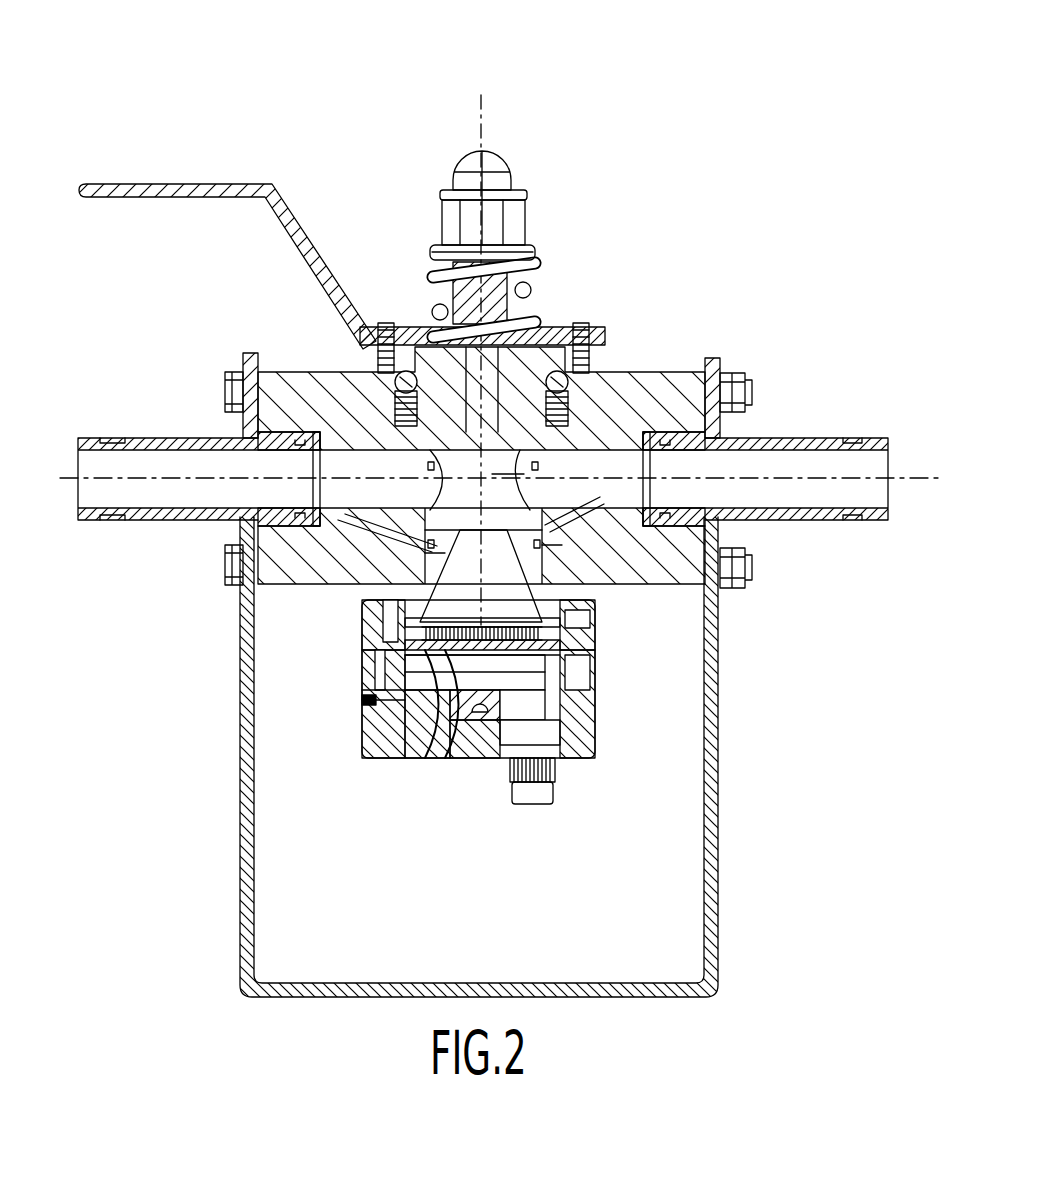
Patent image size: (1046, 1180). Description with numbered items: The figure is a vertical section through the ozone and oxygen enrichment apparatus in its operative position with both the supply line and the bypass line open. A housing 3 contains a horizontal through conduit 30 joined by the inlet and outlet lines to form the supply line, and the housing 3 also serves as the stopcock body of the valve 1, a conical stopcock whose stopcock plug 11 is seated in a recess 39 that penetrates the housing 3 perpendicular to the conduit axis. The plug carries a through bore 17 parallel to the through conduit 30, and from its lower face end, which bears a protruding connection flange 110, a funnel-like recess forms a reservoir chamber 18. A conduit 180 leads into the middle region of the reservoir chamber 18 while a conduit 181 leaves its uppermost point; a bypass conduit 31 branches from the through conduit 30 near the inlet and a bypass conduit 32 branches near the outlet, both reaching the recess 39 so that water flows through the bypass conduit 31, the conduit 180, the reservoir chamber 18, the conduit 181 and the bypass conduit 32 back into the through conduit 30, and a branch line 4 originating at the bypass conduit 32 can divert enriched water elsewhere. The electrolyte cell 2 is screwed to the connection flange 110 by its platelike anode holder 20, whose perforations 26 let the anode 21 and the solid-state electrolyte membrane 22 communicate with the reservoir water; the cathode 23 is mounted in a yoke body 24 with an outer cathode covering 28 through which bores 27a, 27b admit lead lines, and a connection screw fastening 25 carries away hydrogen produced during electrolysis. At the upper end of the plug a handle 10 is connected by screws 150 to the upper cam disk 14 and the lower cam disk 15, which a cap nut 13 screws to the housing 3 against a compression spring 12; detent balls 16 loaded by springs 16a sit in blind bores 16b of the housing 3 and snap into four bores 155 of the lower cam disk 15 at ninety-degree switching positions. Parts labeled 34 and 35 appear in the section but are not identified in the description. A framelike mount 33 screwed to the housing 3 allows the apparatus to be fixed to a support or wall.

The valve 1 is at (554, 138).
The electrolyte cell 2 is at (478, 754).
The housing 3 is at (667, 378).
The branch line 4 is at (548, 538).
The handle 10 is at (202, 185).
The stopcock plug 11 is at (510, 300).
The compression spring 12 is at (528, 262).
The cap nut 13 is at (457, 190).
The upper cam disk 14 is at (427, 345).
The lower cam disk 15 is at (394, 326).
The detent balls 16 is at (387, 372).
The springs 16a is at (402, 432).
The blind bores 16b is at (384, 398).
The through bore 17 is at (508, 459).
The reservoir chamber 18 is at (522, 596).
The anode holder 20 is at (364, 642).
The anode 21 is at (480, 720).
The solid-state electrolyte membrane 22 is at (412, 742).
The cathode 23 is at (527, 684).
The yoke body 24 is at (500, 760).
The connection screw fastening 25 is at (542, 804).
The perforations 26 is at (447, 732).
The bore 27a is at (582, 760).
The bore 27b is at (367, 748).
The cathode covering 28 is at (594, 742).
The through conduit 30 is at (708, 432).
The bypass conduit 31 is at (432, 526).
The bypass conduit 32 is at (705, 532).
The framelike mount 33 is at (718, 835).
The flange bolt 34 is at (744, 576).
The screw 35 is at (558, 372).
The recess 39 is at (577, 394).
The connection flange 110 is at (592, 632).
The screws 150 is at (402, 328).
The bores 155 is at (592, 358).
The conduit 180 is at (387, 615).
The conduit 181 is at (550, 562).